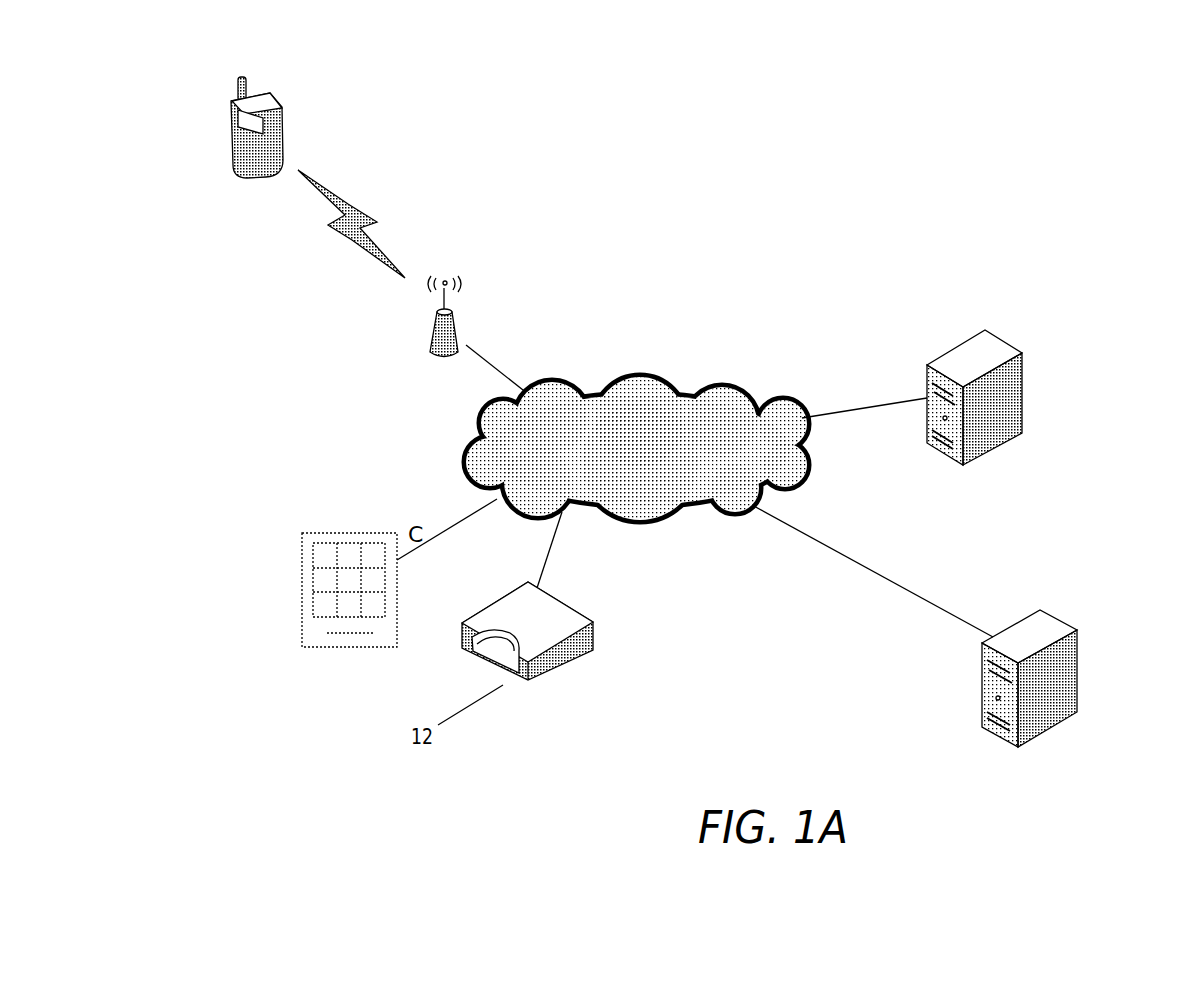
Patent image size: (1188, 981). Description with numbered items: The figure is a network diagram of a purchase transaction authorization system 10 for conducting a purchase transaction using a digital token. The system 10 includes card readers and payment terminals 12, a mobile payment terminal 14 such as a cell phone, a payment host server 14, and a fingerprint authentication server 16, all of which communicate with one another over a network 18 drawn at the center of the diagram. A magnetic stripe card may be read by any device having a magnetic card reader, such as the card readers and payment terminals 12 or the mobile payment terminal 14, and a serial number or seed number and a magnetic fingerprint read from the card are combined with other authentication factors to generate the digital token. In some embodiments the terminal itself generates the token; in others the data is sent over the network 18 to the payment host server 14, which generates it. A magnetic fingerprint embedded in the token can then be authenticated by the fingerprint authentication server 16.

The system 10 is at (783, 223).
The card readers and payment terminals 12 is at (283, 663).
The mobile payment terminal / payment host server 14 is at (272, 100).
The fingerprint authentication server 16 is at (1078, 685).
The network 18 is at (673, 512).